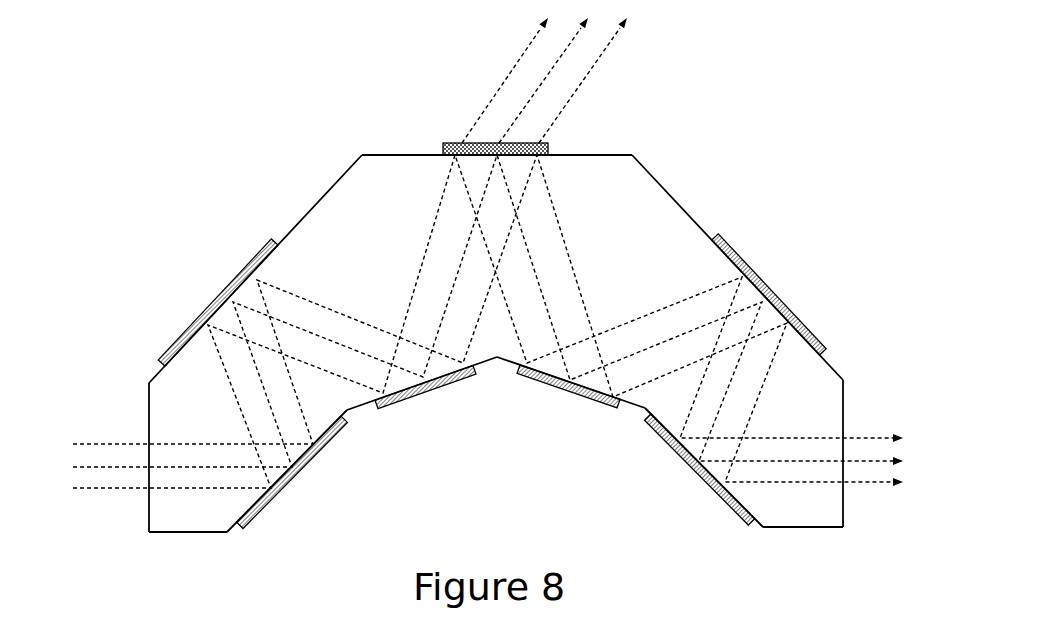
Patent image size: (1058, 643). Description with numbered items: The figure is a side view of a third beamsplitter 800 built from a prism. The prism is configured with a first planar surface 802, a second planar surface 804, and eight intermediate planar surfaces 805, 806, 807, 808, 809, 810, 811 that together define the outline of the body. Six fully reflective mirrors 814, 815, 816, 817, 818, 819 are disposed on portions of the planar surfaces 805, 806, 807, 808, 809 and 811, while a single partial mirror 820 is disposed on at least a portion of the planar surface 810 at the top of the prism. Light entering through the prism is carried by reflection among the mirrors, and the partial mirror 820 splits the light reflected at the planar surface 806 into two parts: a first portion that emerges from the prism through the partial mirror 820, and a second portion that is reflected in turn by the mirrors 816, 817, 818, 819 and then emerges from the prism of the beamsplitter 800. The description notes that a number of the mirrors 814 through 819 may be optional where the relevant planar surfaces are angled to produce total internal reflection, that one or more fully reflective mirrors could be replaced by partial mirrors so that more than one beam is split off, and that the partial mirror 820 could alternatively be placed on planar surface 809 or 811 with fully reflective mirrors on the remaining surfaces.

The third beamsplitter 800 is at (798, 105).
The first planar surface 802 is at (149, 520).
The second planar surface 804 is at (845, 505).
The intermediate planar surface 805 is at (232, 531).
The intermediate planar surface 806 is at (352, 411).
The intermediate planar surface 807 is at (510, 363).
The intermediate planar surface 808 is at (760, 527).
The intermediate planar surface 809 is at (158, 374).
The intermediate planar surface 810 is at (383, 155).
The intermediate planar surface 811 is at (840, 372).
The fully reflective mirror 814 is at (293, 477).
The fully reflective mirror 815 is at (422, 403).
The fully reflective mirror 816 is at (598, 404).
The fully reflective mirror 817 is at (708, 490).
The fully reflective mirror 818 is at (247, 263).
The fully reflective mirror 819 is at (777, 290).
The partial mirror 820 is at (549, 142).